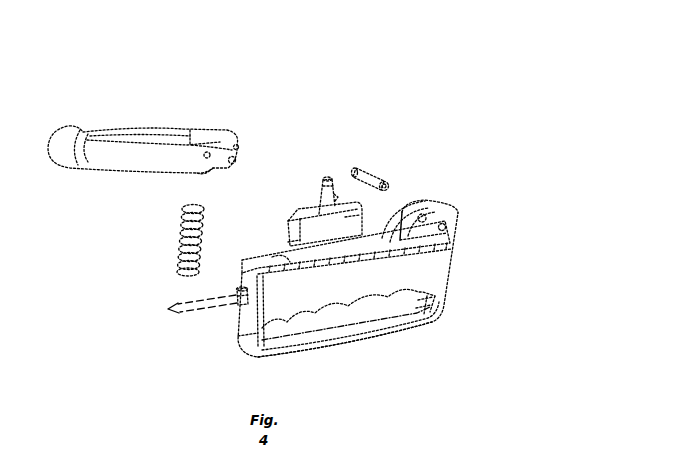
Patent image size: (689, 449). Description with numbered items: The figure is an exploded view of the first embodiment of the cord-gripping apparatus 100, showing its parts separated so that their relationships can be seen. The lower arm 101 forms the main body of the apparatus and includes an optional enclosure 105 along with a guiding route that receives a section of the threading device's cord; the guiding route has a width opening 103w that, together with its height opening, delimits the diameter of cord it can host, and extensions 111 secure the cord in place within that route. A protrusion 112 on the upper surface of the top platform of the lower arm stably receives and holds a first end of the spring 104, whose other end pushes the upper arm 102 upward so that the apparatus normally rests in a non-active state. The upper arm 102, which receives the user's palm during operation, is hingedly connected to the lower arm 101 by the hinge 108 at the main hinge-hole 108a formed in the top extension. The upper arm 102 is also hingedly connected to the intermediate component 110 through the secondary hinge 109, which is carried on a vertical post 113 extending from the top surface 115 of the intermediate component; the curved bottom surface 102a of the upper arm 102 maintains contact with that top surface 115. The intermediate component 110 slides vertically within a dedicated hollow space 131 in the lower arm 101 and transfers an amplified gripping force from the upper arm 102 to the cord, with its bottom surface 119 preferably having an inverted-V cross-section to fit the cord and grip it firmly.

The locking assembly 100 is at (524, 109).
The lower arm 101 is at (442, 270).
The upper arm 102 is at (167, 145).
The curved bottom surface 102a is at (207, 172).
The width opening 103w is at (180, 311).
The spring 104 is at (178, 256).
The enclosure 105 is at (372, 337).
The hinge 108 is at (373, 178).
The main hinge-hole 108a is at (446, 227).
The secondary hinge 109 is at (320, 176).
The intermediate component 110 is at (348, 223).
The extensions 111 is at (236, 293).
The protrusion 112 is at (283, 260).
The vertical post 113 is at (328, 176).
The top surface 115 is at (291, 220).
The bottom surface 119 is at (291, 240).
The hollow space 131 is at (402, 240).